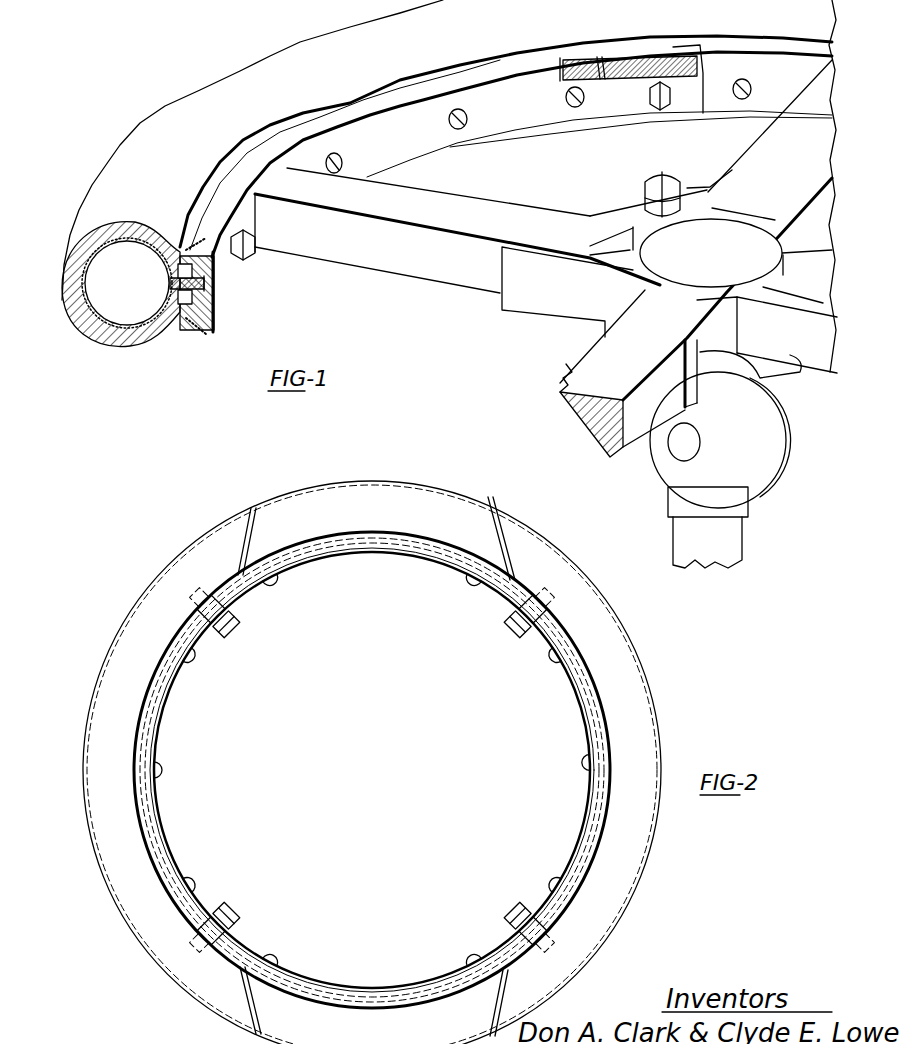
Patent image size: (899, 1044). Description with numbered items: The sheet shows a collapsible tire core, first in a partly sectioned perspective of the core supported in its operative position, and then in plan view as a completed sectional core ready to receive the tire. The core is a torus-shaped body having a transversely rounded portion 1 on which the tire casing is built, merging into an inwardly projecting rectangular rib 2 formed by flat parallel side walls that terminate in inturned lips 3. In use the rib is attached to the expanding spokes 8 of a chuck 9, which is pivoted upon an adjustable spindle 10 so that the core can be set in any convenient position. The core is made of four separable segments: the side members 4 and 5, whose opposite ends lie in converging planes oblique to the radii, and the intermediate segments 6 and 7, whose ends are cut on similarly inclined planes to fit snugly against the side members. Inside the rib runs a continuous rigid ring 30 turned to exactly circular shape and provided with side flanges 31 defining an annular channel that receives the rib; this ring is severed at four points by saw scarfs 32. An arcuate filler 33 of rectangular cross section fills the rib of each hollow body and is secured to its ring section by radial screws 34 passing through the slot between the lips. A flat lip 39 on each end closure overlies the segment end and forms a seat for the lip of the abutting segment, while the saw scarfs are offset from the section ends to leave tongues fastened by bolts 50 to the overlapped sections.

In FIG. 1, the rounded portion 1 is at (90, 272).
In FIG. 1, the rectangular rib 2 is at (640, 56).
In FIG. 1, the inturned lips 3 is at (214, 270).
In FIG. 2, the side member 4 is at (122, 802).
In FIG. 2, the side member 5 is at (620, 742).
In FIG. 2, the intermediate segment 6 is at (360, 495).
In FIG. 2, the intermediate segment 7 is at (358, 1012).
In FIG. 1, the expanding spokes 8 is at (385, 262).
In FIG. 1, the chuck 9 is at (577, 294).
In FIG. 1, the adjustable spindle 10 is at (786, 372).
In FIG. 1, the rigid ring 30 is at (500, 132).
In FIG. 2, the rigid ring 30 is at (340, 556).
In FIG. 1, the side flanges 31 is at (197, 240).
In FIG. 1, the saw scarfs 32 is at (215, 238).
In FIG. 2, the saw scarfs 32 is at (185, 632).
In FIG. 1, the arcuate filler 33 is at (178, 276).
In FIG. 1, the radial screws 34 is at (468, 119).
In FIG. 2, the radial screws 34 is at (270, 590).
In FIG. 1, the lip 39 is at (598, 56).
In FIG. 2, the lip 39 is at (258, 527).
In FIG. 1, the bolts 50 is at (250, 251).
In FIG. 2, the bolts 50 is at (242, 623).